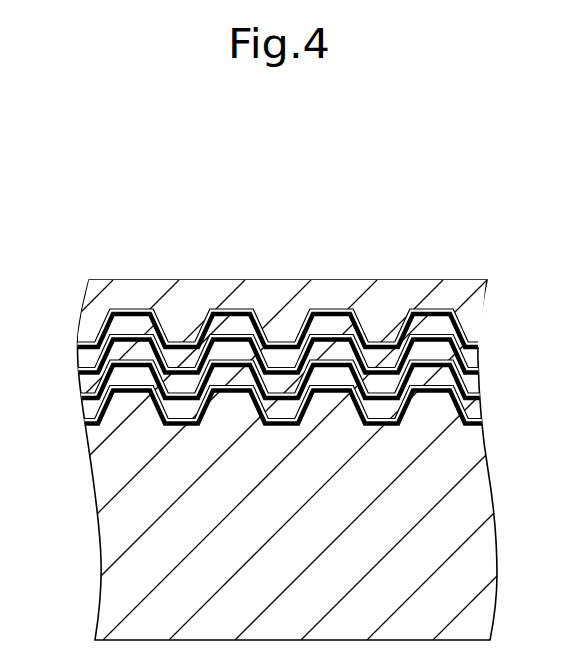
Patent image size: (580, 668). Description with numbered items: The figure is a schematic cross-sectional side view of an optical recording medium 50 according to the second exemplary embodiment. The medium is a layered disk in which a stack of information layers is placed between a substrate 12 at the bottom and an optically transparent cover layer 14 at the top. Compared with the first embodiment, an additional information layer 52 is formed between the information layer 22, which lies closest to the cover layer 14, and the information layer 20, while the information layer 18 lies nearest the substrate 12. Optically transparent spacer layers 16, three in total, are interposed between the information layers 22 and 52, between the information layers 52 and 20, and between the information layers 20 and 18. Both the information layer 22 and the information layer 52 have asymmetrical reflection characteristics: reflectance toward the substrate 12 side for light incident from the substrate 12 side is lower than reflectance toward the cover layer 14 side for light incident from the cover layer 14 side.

The optical recording medium 50 is at (290, 395).
The substrate 12 is at (493, 495).
The cover layer 14 is at (485, 301).
The spacer layers 16 is at (277, 375).
The information layer 22 is at (478, 346).
The information layer 52 is at (475, 373).
The information layer 20 is at (474, 402).
The information layer 18 is at (482, 422).